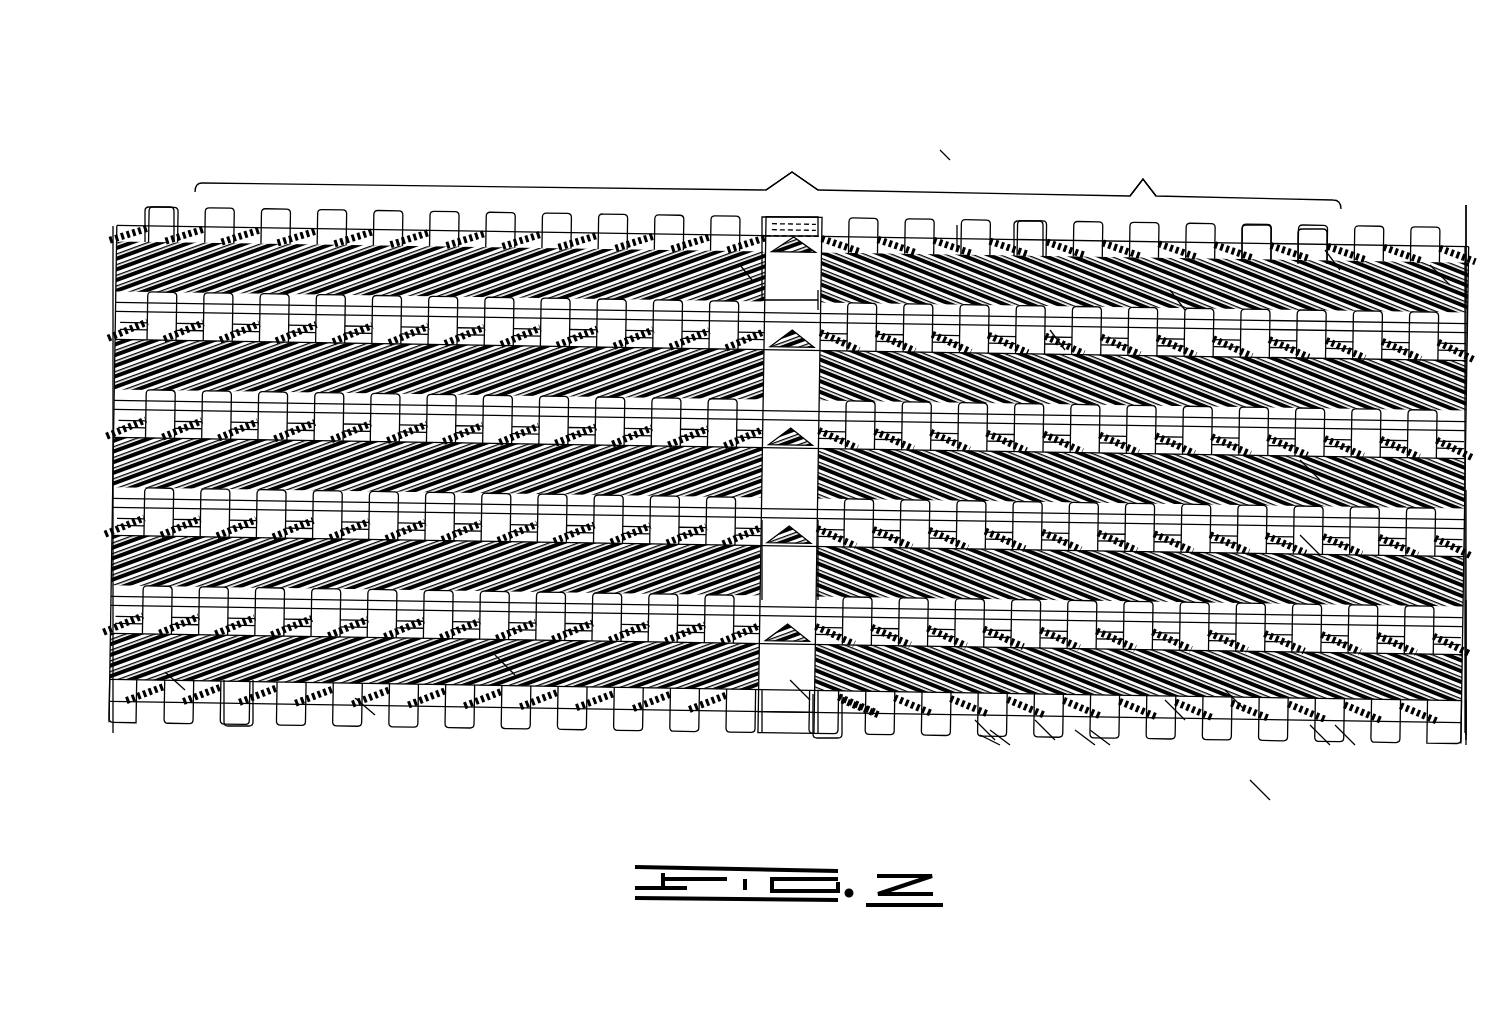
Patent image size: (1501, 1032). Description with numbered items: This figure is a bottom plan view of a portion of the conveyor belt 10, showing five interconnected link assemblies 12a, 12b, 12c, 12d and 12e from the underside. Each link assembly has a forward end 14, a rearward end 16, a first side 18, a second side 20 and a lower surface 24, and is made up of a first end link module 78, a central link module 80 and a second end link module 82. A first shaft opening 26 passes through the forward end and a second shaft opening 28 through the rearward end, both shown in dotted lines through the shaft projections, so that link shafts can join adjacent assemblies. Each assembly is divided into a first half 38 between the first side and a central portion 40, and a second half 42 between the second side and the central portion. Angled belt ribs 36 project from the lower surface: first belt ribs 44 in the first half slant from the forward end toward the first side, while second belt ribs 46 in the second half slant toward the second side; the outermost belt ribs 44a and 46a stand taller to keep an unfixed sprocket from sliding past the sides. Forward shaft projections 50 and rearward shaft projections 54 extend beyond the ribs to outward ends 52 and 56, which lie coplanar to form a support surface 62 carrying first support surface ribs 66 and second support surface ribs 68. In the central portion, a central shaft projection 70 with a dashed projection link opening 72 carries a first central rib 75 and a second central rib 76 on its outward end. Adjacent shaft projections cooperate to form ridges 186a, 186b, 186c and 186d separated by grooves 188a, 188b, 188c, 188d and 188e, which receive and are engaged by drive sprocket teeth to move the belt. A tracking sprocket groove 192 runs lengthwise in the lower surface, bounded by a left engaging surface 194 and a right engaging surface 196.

The conveyor belt 10 is at (946, 152).
The link assembly 12a is at (1466, 700).
The link assembly 12b is at (1468, 600).
The link assembly 12c is at (1470, 490).
The link assembly 12d is at (1468, 393).
The link assembly 12e is at (1464, 303).
The forward end 14 is at (790, 560).
The rearward end 16 is at (828, 740).
The first side 18 is at (122, 688).
The second side 20 is at (1462, 738).
The lower surface 24 is at (1235, 700).
The first shaft opening 26 is at (1017, 235).
The second shaft opening 28 is at (858, 738).
The belt rib 36 is at (1310, 540).
The first half 38 is at (455, 181).
The central portion 40 is at (792, 172).
The second half 42 is at (1143, 178).
The first belt rib 44 is at (254, 672).
The belt rib 44a is at (138, 272).
The second belt rib 46 is at (1085, 742).
The belt rib 46a is at (1450, 278).
The forward shaft projection 50 is at (1252, 227).
The outward end 52 is at (1270, 232).
The rearward shaft projection 54 is at (990, 742).
The outward end 56 is at (985, 742).
The support surface 62 is at (1100, 740).
The first support surface rib 66 is at (365, 708).
The second support surface rib 68 is at (1000, 742).
The central shaft projection 70 is at (800, 700).
The projection link opening 72 is at (790, 215).
The first central rib 75 is at (748, 275).
The second central rib 76 is at (824, 300).
The first end link module 78 is at (172, 680).
The central link module 80 is at (506, 665).
The second end link module 82 is at (1346, 740).
The ridge 186a is at (1045, 735).
The ridge 186b is at (1258, 790).
The ridge 186c is at (1310, 470).
The ridge 186d is at (962, 312).
The groove 188a is at (1322, 738).
The groove 188b is at (1172, 700).
The groove 188c is at (1332, 262).
The diagonal rib 188d is at (1058, 345).
The diagonal rib 188e is at (1178, 305).
The tracking sprocket groove 192 is at (800, 715).
The left engaging surface 194 is at (775, 700).
The right engaging surface 196 is at (800, 265).